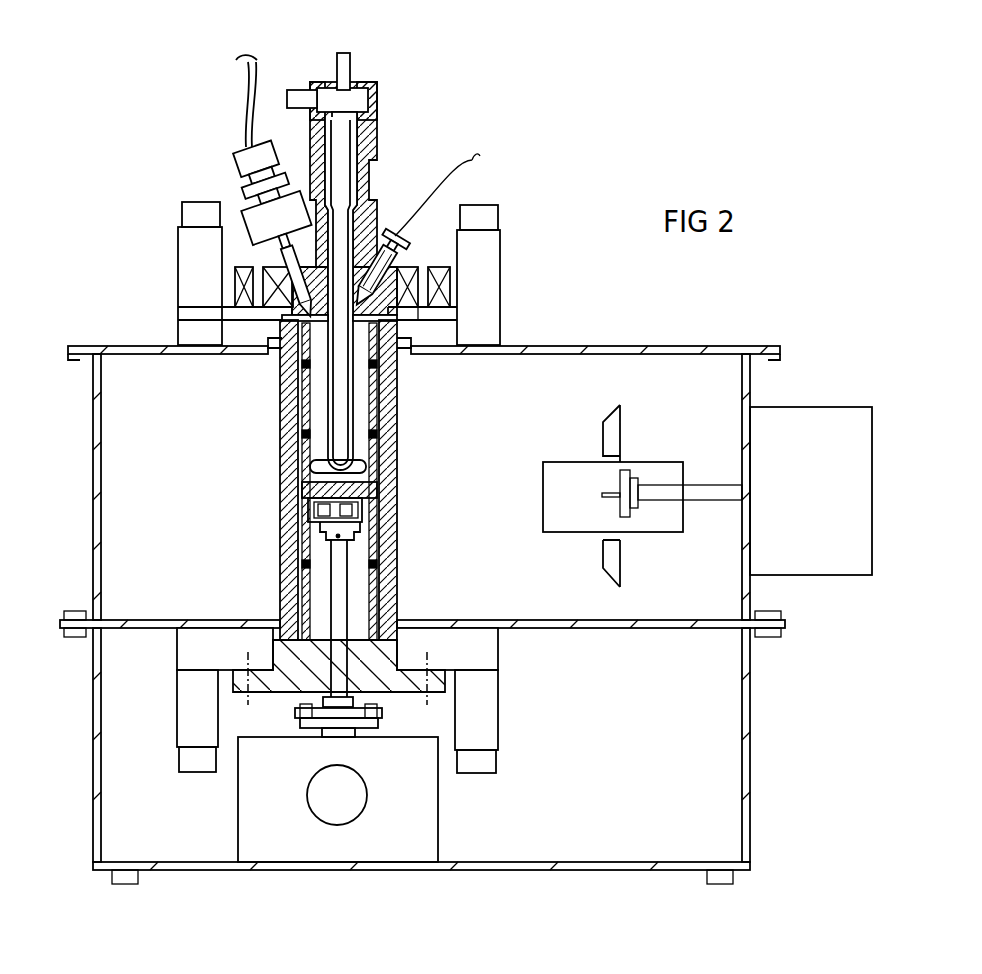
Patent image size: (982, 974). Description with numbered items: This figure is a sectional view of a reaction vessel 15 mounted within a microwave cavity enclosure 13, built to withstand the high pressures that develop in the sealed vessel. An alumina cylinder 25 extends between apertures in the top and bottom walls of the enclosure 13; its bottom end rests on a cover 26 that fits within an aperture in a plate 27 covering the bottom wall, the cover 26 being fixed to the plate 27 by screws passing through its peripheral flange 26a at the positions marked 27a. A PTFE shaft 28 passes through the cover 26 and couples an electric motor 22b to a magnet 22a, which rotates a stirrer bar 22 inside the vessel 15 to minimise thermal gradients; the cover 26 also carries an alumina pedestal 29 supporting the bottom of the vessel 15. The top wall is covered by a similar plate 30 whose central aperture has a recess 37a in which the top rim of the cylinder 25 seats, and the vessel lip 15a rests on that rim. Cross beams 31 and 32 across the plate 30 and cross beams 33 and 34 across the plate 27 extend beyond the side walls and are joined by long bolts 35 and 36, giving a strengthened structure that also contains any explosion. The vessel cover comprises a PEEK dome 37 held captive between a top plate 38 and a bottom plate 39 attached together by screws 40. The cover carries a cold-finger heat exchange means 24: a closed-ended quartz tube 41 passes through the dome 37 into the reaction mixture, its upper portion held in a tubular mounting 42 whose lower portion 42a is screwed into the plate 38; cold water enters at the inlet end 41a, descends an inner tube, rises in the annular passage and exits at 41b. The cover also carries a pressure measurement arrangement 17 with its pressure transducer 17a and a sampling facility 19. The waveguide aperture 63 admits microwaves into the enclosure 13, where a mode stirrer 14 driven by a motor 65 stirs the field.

The microwave cavity enclosure 13 is at (127, 362).
The mode stirrer 14 is at (600, 430).
The reaction vessel 15 is at (296, 407).
The lip 15a is at (283, 328).
The pressure measurement arrangement 17 is at (212, 133).
The pressure transducer 17a is at (238, 172).
The sampling facility 19 is at (410, 243).
The stirrer bar 22 is at (323, 465).
The magnet 22a is at (317, 512).
The motor 22b is at (278, 847).
The heat exchange means 24 is at (378, 66).
The alumina cylinder 25 is at (398, 413).
The cover 26 is at (432, 695).
The peripheral flange 26a is at (432, 688).
The plate 27 is at (197, 647).
The screw positions 27a is at (247, 660).
The shaft 28 is at (337, 570).
The alumina pedestal 29 is at (375, 585).
The plate 30 is at (193, 313).
The cross beam 31 is at (192, 250).
The cross beam 32 is at (488, 238).
The cross beam 33 is at (197, 728).
The cross beam 34 is at (480, 718).
The bolts 35 is at (190, 213).
The bolts 36 is at (480, 212).
The dome 37 is at (452, 277).
The recess 37a is at (393, 330).
The top plate 38 is at (245, 278).
The bottom plate 39 is at (468, 308).
The screws 40 is at (422, 308).
The tube 41 is at (368, 82).
The inlet end 41a is at (345, 40).
The outlet 41b is at (268, 97).
The tubular mounting 42 is at (367, 137).
The lower portion 42a is at (366, 252).
The waveguide aperture 63 is at (560, 502).
The motor 65 is at (803, 427).